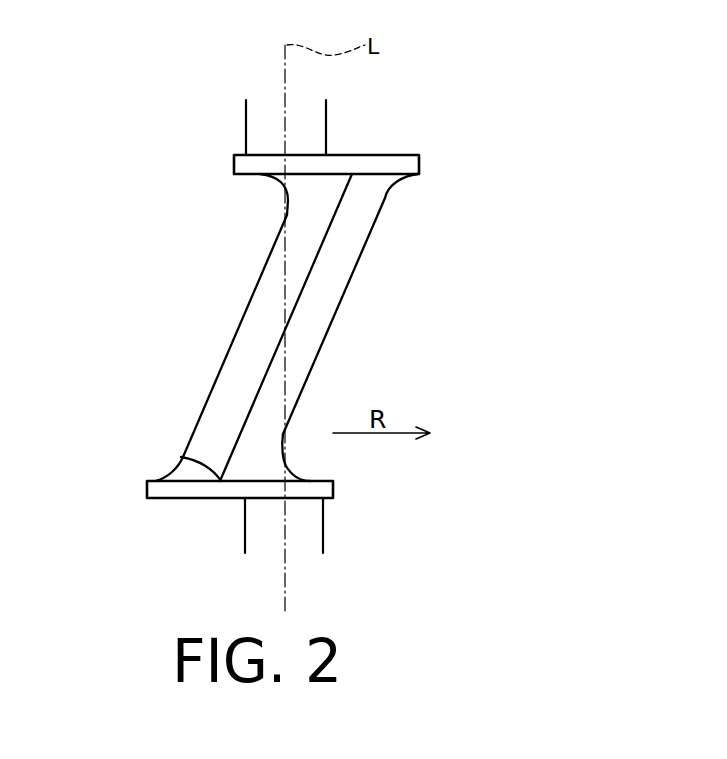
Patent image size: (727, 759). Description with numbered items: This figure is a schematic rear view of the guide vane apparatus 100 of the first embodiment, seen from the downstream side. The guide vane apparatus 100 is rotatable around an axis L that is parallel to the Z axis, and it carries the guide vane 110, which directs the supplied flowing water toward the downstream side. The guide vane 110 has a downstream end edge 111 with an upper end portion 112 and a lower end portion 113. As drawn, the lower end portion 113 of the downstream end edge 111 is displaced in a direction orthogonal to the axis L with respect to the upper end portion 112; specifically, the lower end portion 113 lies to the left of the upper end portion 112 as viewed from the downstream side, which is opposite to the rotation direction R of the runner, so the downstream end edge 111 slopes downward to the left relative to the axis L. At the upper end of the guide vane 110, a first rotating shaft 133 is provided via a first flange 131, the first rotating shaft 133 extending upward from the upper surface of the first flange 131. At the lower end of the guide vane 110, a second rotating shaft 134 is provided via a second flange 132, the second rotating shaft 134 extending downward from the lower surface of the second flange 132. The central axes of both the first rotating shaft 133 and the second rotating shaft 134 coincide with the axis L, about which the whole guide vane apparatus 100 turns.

The guide vane apparatus 100 is at (463, 137).
The guide vane 110 is at (257, 320).
The downstream end edge 111 is at (307, 277).
The upper end portion 112 is at (352, 176).
The lower end portion 113 is at (183, 457).
The first flange 131 is at (410, 165).
The second flange 132 is at (327, 488).
The first rotating shaft 133 is at (310, 120).
The second rotating shaft 134 is at (263, 533).